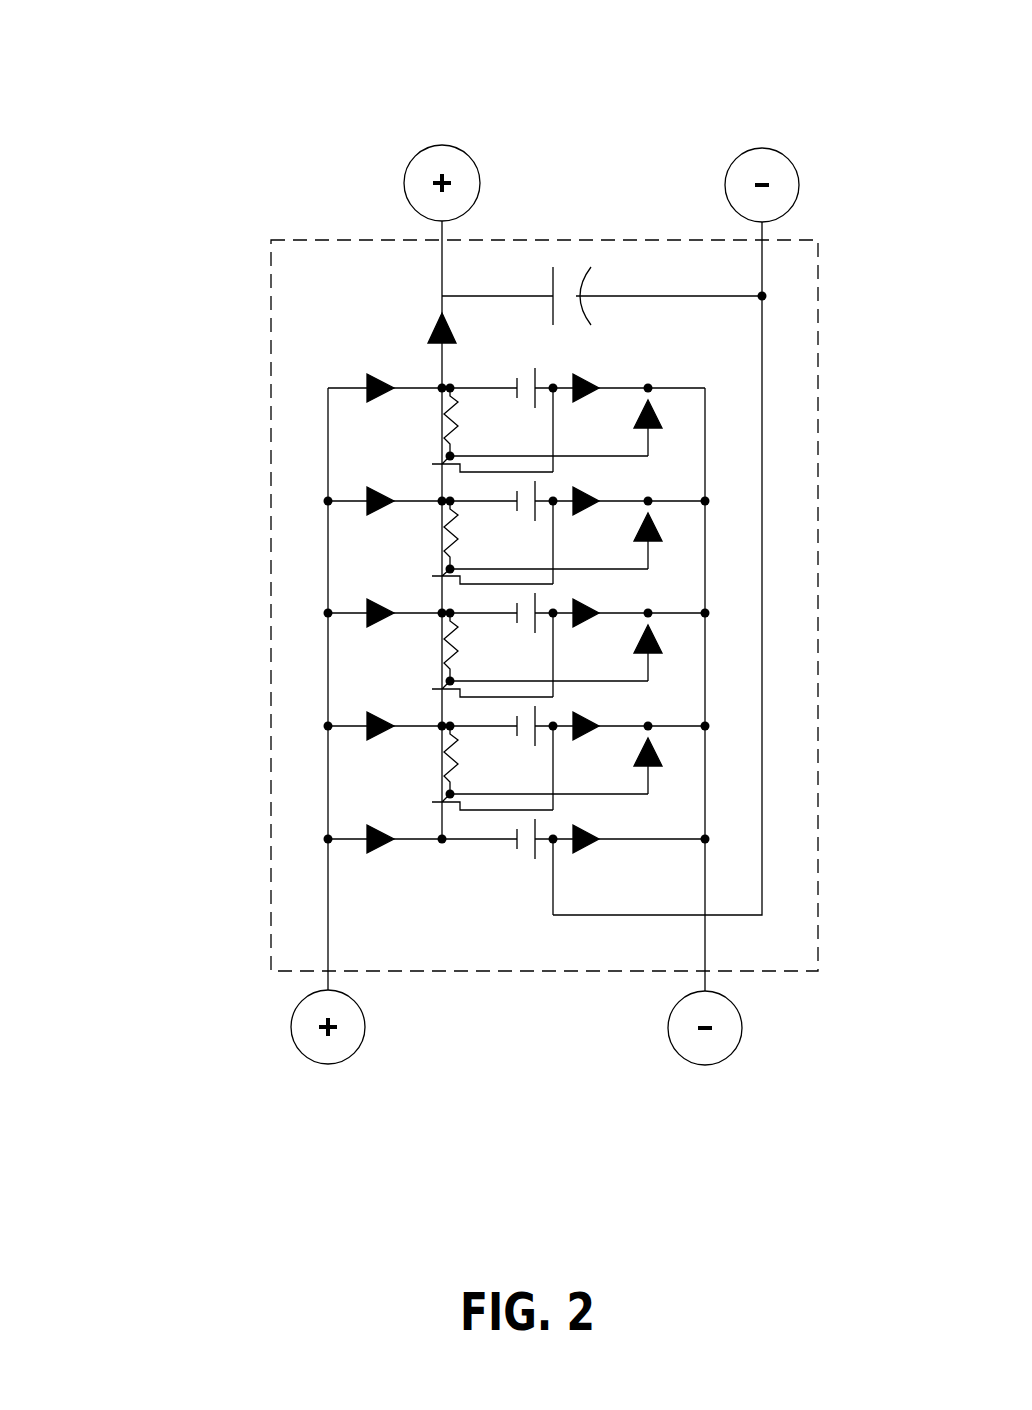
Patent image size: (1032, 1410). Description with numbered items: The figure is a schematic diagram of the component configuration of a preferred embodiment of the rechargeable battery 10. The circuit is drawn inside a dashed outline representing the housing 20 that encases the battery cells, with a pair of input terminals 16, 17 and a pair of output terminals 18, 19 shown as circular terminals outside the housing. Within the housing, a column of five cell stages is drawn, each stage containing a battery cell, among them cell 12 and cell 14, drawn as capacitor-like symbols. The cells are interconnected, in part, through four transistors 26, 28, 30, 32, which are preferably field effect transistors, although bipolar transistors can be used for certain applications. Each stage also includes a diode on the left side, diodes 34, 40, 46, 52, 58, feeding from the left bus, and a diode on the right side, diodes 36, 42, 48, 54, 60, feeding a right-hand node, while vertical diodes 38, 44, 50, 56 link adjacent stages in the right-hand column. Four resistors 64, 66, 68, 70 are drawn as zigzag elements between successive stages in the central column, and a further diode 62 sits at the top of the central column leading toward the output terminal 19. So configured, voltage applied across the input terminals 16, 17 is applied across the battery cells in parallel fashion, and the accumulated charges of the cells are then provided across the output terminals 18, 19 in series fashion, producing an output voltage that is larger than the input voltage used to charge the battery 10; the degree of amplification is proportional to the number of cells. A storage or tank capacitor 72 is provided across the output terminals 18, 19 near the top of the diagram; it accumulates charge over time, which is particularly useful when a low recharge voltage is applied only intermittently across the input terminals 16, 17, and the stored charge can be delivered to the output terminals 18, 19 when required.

The rechargeable battery 10 is at (164, 85).
The battery cell 12 is at (527, 848).
The battery cell 14 is at (525, 735).
The input terminal 16 is at (743, 1028).
The input terminal 17 is at (366, 1027).
The output terminal 18 is at (799, 185).
The output terminal 19 is at (480, 183).
The housing 20 is at (270, 332).
The transistor 26 is at (440, 796).
The transistor 28 is at (440, 683).
The transistor 30 is at (440, 571).
The transistor 32 is at (440, 458).
The diode 34 is at (365, 831).
The diode 36 is at (587, 831).
The diode 38 is at (662, 755).
The diode 40 is at (365, 718).
The diode 42 is at (587, 718).
The diode 44 is at (662, 642).
The diode 46 is at (365, 605).
The diode 48 is at (587, 605).
The diode 50 is at (662, 530).
The diode 52 is at (365, 493).
The diode 54 is at (587, 493).
The diode 56 is at (662, 417).
The diode 58 is at (365, 380).
The diode 60 is at (587, 380).
The diode 62 is at (440, 318).
The resistor 64 is at (445, 763).
The resistor 66 is at (445, 650).
The resistor 68 is at (445, 538).
The resistor 70 is at (445, 425).
The tank capacitor 72 is at (551, 290).